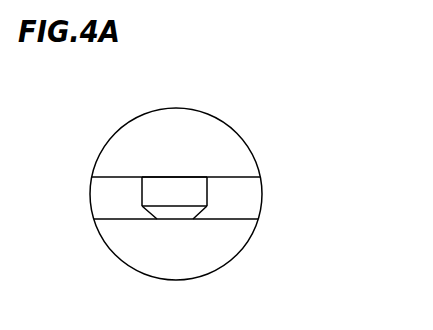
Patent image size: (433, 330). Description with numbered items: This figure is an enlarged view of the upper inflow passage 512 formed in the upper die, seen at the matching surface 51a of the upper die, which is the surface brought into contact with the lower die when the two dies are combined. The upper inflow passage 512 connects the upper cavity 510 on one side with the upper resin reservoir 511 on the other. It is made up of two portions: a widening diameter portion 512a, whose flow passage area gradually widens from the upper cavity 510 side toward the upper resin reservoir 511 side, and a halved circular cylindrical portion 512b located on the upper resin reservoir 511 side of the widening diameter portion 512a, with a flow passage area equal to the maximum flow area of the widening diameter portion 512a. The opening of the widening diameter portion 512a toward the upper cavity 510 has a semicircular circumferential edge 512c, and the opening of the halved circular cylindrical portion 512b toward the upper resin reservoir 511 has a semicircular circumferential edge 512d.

The upper cavity 510 is at (145, 262).
The upper resin reservoir 511 is at (164, 123).
The matching surface 51a is at (105, 200).
The upper inflow passage 512 is at (267, 194).
The widening diameter portion 512a is at (195, 212).
The halved circular cylindrical portion 512b is at (203, 190).
The upper cavity side opening circumferential edge 512c is at (182, 220).
The upper resin reservoir side opening circumferential edge 512d is at (191, 177).